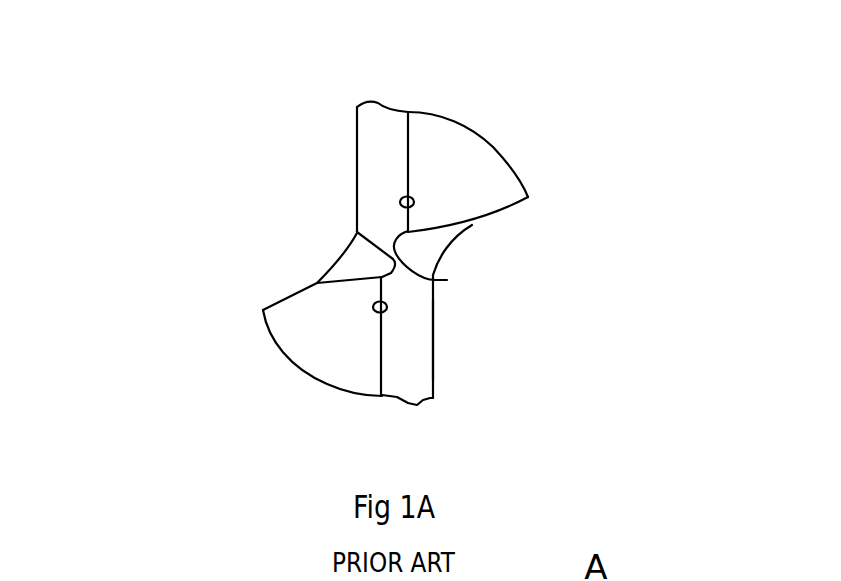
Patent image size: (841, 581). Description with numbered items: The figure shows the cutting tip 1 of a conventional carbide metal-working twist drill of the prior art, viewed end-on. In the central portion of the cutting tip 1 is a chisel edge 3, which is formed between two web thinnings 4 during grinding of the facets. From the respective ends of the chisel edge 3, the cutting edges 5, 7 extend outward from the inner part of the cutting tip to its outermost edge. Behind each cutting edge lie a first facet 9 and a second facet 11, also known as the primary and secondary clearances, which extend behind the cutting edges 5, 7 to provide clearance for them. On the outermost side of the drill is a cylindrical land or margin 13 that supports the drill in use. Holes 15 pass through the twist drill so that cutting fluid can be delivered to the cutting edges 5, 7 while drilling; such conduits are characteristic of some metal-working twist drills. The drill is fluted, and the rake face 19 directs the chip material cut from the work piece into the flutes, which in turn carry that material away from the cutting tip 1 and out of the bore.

The cutting tip 1 is at (617, 50).
The chisel edge 3 is at (447, 280).
The web thinnings 4 is at (350, 263).
The cutting edge 5 is at (355, 157).
The cutting edge 7 is at (435, 357).
The first facet 9 is at (365, 195).
The second facet 11 is at (437, 130).
The cylindrical land 13 is at (365, 107).
The holes 15 is at (415, 202).
The rake face 19 is at (350, 175).